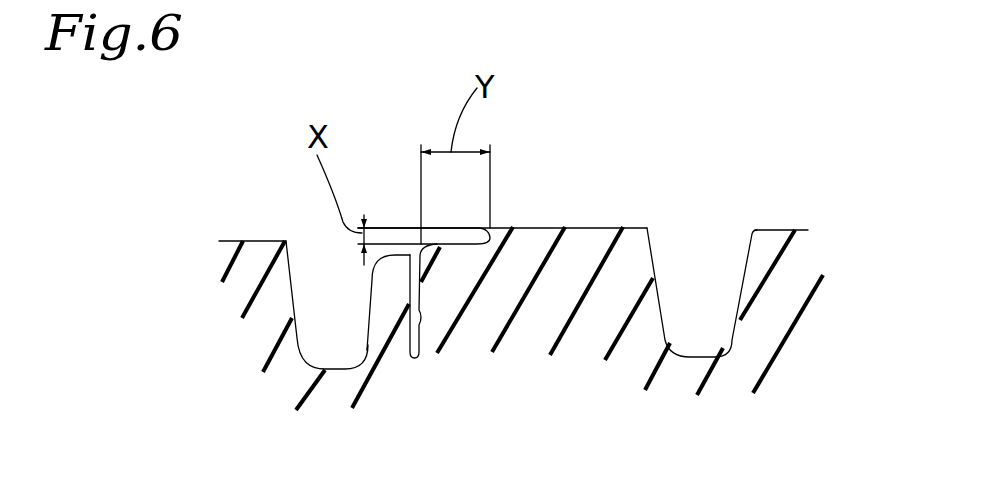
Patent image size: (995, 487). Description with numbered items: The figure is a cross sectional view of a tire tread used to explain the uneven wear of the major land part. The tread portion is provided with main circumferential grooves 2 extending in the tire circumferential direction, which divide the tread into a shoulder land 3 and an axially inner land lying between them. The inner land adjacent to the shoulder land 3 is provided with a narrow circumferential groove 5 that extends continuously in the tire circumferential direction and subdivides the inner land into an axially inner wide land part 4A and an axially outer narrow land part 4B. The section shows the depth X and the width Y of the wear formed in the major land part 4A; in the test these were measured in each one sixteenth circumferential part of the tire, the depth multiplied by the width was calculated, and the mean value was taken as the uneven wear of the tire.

The main circumferential groove 2 is at (330, 323).
The shoulder land 3 is at (257, 255).
The axially inner wide land part 4A is at (537, 237).
The axially outer narrow land part 4B is at (383, 298).
The narrow circumferential groove 5 is at (420, 305).